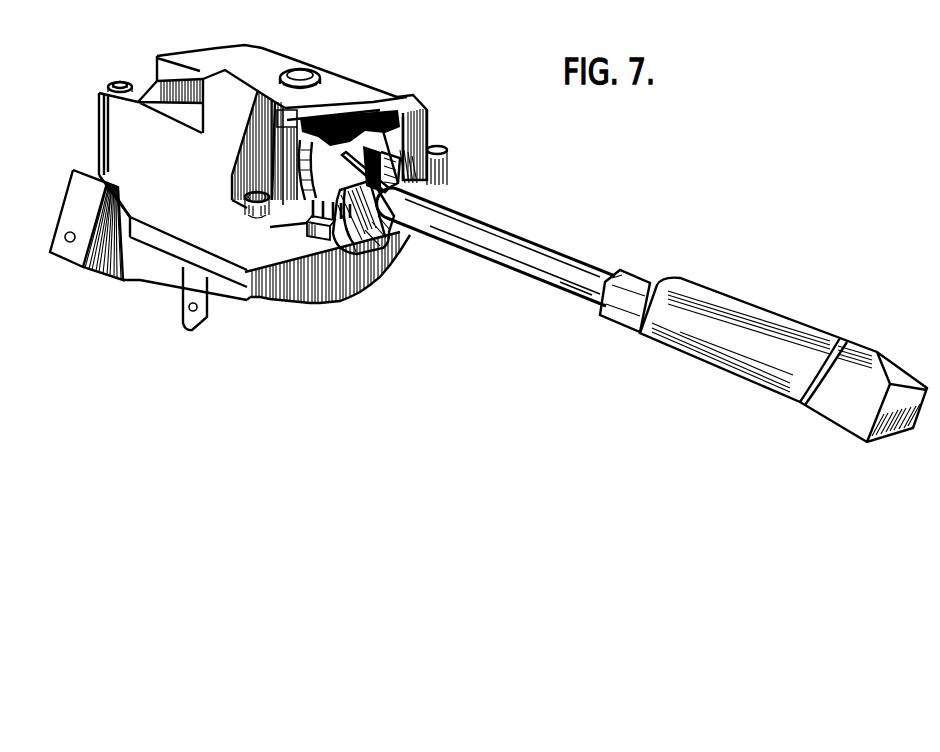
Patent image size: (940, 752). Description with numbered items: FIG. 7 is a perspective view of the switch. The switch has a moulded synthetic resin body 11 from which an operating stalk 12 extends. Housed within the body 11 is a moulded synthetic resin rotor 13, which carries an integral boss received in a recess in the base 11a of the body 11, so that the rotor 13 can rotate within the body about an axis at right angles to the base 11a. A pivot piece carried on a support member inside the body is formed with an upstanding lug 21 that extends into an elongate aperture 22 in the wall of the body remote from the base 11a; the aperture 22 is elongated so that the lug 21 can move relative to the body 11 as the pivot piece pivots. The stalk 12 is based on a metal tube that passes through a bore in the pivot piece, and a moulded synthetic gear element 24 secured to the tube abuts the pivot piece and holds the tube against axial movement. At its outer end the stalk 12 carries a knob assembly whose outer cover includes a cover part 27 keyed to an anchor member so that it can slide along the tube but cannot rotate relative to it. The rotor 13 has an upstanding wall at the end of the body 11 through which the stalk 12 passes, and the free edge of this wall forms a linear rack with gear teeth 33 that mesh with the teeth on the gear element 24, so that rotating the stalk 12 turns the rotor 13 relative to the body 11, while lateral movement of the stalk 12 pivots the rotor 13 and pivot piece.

The body 11 is at (397, 89).
The base 11a is at (293, 278).
The operating stalk 12 is at (493, 231).
The rotor 13 is at (318, 229).
The lug 21 is at (312, 76).
The elongate aperture 22 is at (310, 70).
The gear element 24 is at (398, 183).
The cover part 27 is at (742, 301).
The gear teeth 33 is at (325, 233).